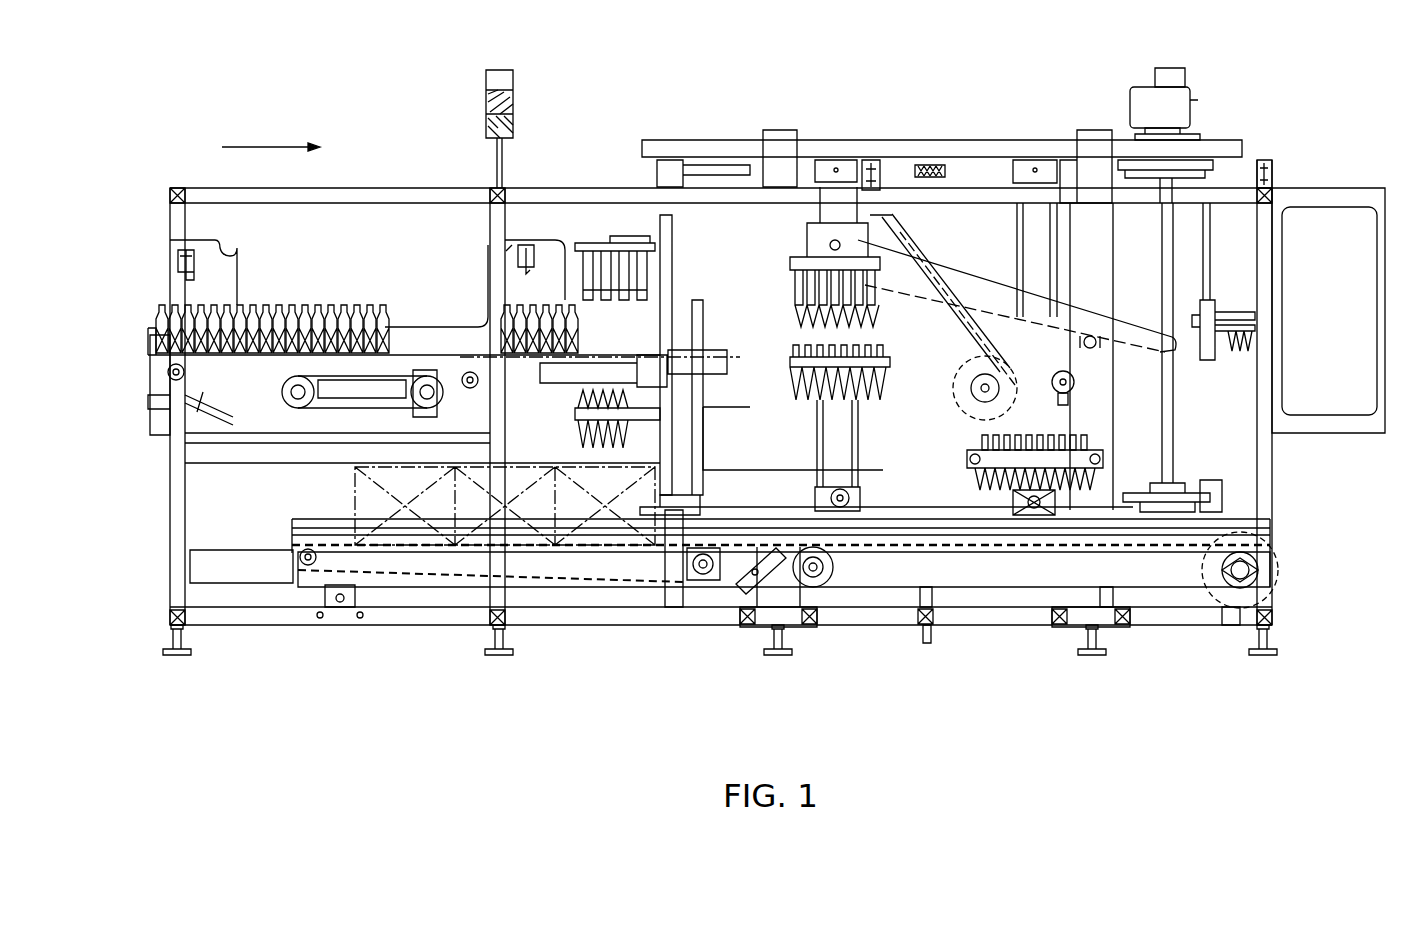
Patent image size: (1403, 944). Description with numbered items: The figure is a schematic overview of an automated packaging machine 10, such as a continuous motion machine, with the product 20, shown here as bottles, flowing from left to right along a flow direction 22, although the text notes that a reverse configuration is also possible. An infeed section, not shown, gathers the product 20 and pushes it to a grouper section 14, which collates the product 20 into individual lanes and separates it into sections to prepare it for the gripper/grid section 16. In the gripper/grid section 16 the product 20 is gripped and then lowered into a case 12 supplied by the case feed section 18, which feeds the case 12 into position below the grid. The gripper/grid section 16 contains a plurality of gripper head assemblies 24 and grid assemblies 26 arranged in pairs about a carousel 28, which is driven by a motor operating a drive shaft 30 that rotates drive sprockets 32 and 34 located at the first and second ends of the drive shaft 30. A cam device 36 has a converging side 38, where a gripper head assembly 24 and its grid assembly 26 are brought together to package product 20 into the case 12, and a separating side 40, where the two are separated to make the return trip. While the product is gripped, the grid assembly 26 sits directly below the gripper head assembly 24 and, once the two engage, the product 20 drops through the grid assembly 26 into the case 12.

The packaging machine 10 is at (335, 108).
The case 12 is at (423, 492).
The grouper section 14 is at (410, 236).
The gripper/grid section 16 is at (944, 212).
The case feed section 18 is at (326, 487).
The product 20 is at (268, 300).
The flow direction 22 is at (268, 147).
The gripper head assembly 24 is at (600, 245).
The grid assembly 26 is at (575, 406).
The carousel 28 is at (850, 127).
The drive shaft 30 is at (1162, 252).
The drive sprocket 32 is at (1179, 135).
The drive sprocket 34 is at (1180, 490).
The cam device 36 is at (980, 318).
The converging side 38 is at (950, 488).
The separating side 40 is at (1130, 338).